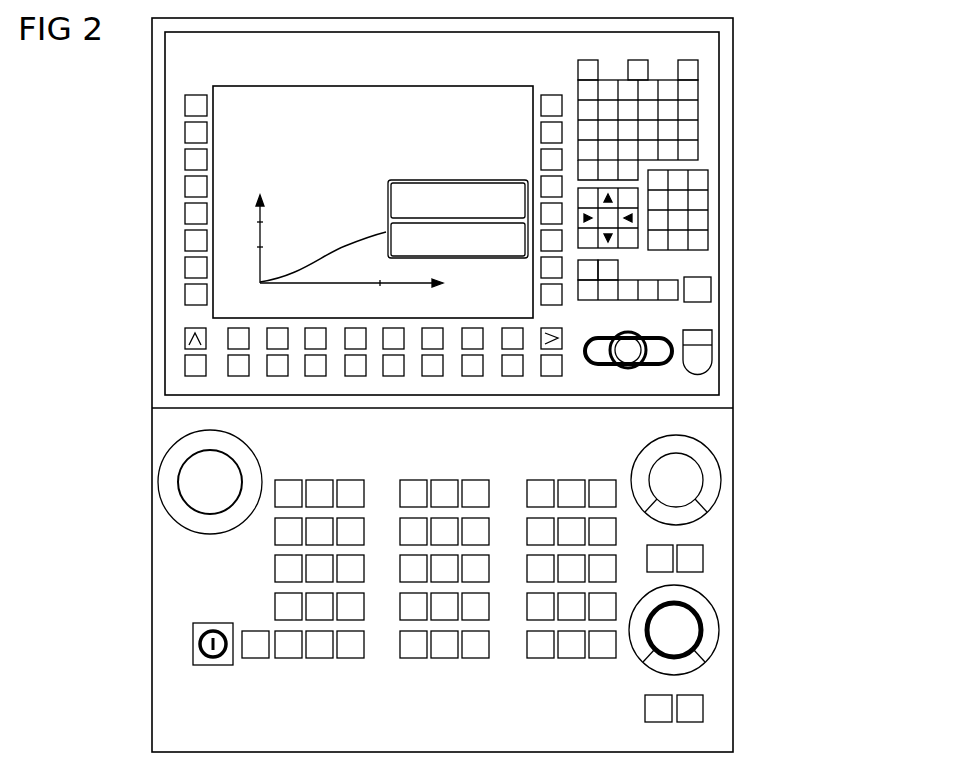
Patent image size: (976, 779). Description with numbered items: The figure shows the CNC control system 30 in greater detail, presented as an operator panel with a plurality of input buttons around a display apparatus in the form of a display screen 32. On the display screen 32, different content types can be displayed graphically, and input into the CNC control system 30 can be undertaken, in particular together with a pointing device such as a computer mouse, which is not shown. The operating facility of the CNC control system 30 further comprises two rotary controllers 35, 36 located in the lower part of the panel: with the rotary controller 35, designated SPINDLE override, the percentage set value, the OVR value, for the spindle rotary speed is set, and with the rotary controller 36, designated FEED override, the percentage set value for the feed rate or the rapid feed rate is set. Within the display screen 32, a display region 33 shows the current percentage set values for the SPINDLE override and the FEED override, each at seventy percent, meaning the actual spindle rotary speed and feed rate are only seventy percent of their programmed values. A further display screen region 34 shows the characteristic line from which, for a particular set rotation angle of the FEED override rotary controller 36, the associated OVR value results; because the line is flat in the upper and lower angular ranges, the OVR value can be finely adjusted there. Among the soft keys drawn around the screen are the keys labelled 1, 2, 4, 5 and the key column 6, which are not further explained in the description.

The CNC control system 30 is at (770, 127).
The display screen 32 is at (371, 121).
The display region 33 is at (443, 180).
The display screen region 34 is at (308, 230).
The rotary controller 35 is at (690, 490).
The rotary controller 36 is at (688, 640).
The soft key 1 is at (188, 367).
The soft key 2 is at (188, 340).
The soft key 4 is at (558, 340).
The soft key 5 is at (558, 367).
The soft key column 6 is at (551, 191).